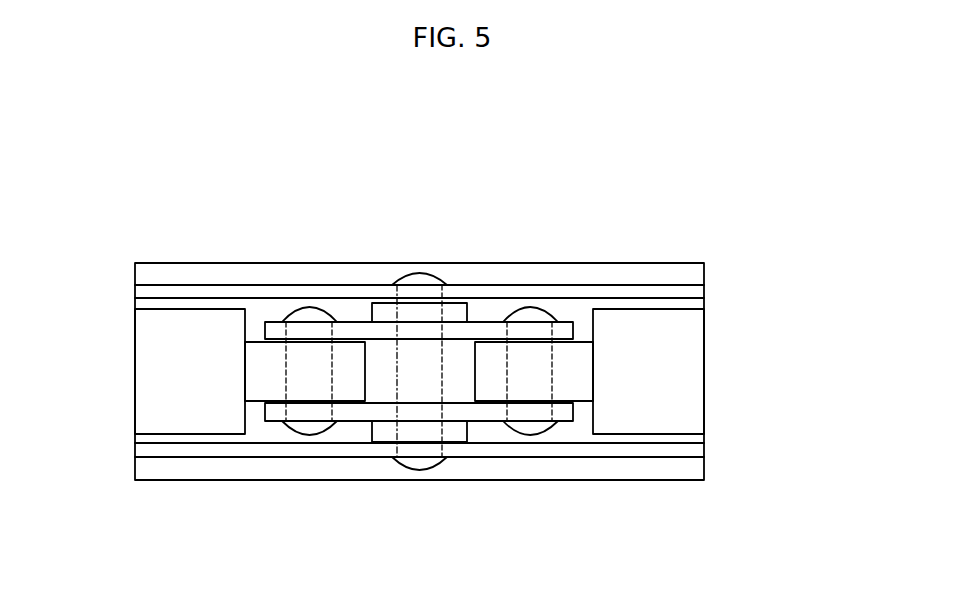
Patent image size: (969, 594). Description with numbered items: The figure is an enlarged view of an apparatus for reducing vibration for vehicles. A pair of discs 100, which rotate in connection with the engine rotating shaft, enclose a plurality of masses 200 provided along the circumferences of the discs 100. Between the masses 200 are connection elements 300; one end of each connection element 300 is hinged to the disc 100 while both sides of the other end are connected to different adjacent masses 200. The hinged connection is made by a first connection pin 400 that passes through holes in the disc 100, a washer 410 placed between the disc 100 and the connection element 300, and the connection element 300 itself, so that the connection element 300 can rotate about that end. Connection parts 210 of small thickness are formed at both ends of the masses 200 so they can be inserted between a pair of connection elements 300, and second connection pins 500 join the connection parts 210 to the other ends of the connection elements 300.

The disc 100 is at (527, 292).
The mass 200 is at (142, 372).
The connection part 210 is at (260, 389).
The connection element 300 is at (486, 320).
The first connection pin 400 is at (417, 273).
The washer 410 is at (384, 312).
The second connection pin 500 is at (308, 306).